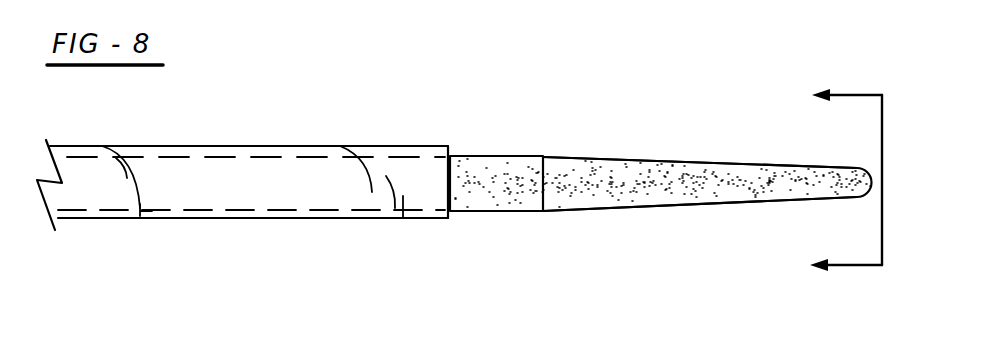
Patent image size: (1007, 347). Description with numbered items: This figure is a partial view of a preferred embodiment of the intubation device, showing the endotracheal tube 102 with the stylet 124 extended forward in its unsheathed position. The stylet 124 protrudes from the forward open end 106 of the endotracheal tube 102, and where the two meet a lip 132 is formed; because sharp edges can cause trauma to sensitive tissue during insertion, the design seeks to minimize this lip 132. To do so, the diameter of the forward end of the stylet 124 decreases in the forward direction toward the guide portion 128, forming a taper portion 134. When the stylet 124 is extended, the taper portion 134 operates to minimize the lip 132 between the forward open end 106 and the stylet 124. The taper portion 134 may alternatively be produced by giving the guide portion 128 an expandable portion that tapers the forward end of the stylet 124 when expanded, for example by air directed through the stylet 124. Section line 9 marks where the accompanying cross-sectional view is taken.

The endotracheal tube 102 is at (156, 141).
The stylet 124 is at (185, 182).
The lip 132 is at (456, 148).
The forward open end 106 is at (460, 212).
The guide portion 128 is at (668, 162).
The taper portion 134 is at (667, 208).
The section line 9- 9 is at (864, 187).